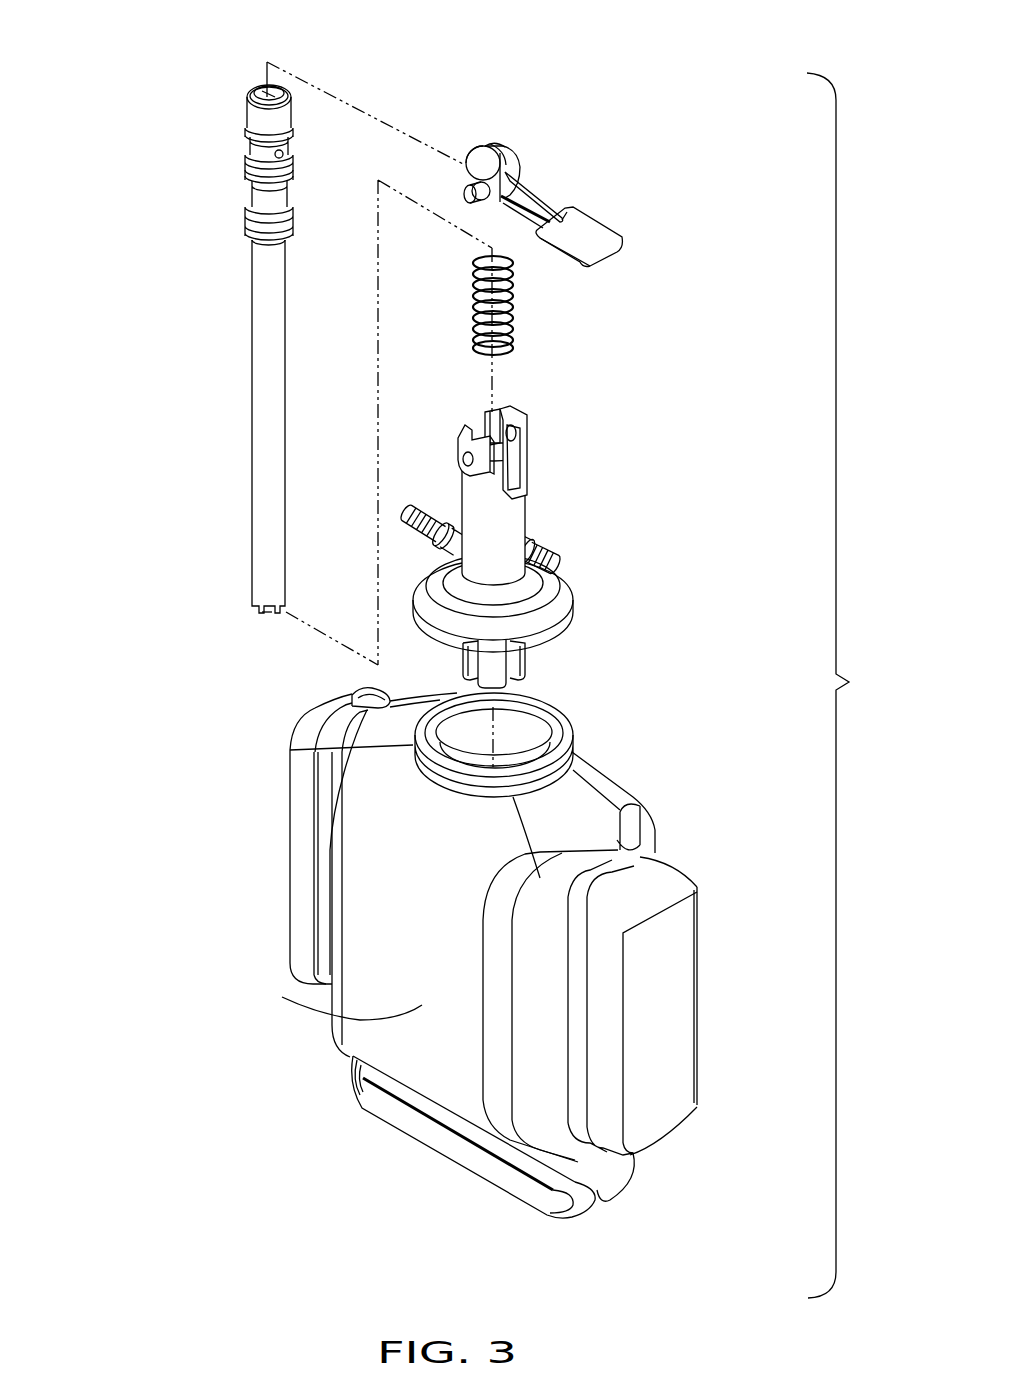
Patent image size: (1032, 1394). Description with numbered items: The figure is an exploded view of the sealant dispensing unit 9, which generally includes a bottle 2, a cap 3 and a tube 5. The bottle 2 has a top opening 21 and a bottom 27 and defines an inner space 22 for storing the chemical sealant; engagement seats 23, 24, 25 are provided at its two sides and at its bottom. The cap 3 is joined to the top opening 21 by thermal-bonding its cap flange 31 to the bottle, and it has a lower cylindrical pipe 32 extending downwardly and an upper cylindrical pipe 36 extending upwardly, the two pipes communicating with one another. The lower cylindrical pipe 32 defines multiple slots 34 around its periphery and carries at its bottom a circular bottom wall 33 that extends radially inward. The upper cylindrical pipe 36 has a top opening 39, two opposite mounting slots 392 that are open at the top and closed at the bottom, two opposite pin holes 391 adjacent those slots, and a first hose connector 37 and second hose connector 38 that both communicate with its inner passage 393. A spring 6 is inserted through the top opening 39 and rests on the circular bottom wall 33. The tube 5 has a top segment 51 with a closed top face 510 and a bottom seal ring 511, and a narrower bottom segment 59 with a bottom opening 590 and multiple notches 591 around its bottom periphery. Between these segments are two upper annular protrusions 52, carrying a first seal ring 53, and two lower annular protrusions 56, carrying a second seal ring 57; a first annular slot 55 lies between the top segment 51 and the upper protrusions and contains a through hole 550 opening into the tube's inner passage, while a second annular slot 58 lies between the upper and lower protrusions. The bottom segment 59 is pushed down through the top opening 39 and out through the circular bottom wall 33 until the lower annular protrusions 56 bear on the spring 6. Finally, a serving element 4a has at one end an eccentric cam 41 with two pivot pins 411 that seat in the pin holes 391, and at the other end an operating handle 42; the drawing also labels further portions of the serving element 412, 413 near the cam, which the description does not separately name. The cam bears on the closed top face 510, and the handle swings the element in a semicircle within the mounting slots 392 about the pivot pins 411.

The bottle 2 is at (410, 1005).
The top opening 21 is at (573, 745).
The inner space 22 is at (655, 830).
The engagement seat 23 is at (665, 1048).
The engagement seat 24 is at (300, 860).
The engagement seat 25 is at (437, 1132).
The bottom 27 is at (467, 1173).
The cap 3 is at (533, 610).
The cap flange 31 is at (570, 593).
The lower cylindrical pipe 32 is at (550, 733).
The circular bottom wall 33 is at (493, 670).
The slots 34 is at (517, 648).
The upper cylindrical pipe 36 is at (500, 517).
The first hose connector 37 is at (430, 520).
The second hose connector 38 is at (543, 543).
The top opening 39 is at (512, 416).
The pin holes 391 is at (470, 450).
The mounting slots 392 is at (523, 470).
The inner passage 393 is at (487, 418).
The serving element 4a is at (528, 180).
The eccentric cam 41 is at (497, 145).
The pivot pins 411 is at (466, 190).
The lever head 412 is at (480, 162).
The lever lower arm 413 is at (497, 203).
The operating handle 42 is at (587, 232).
The tube 5 is at (262, 443).
The top segment 51 is at (258, 120).
The closed top face 510 is at (258, 94).
The bottom seal ring 511 is at (289, 147).
The upper annular protrusions 52 is at (253, 177).
The first seal ring 53 is at (288, 176).
The first annular slot 55 is at (258, 155).
The through hole 550 is at (287, 158).
The lower annular protrusions 56 is at (250, 227).
The second seal ring 57 is at (255, 240).
The second annular slot 58 is at (253, 200).
The bottom segment 59 is at (262, 545).
The bottom opening 590 is at (264, 615).
The notches 591 is at (267, 610).
The spring 6 is at (513, 305).
The sealant dispensing unit 9 is at (845, 685).